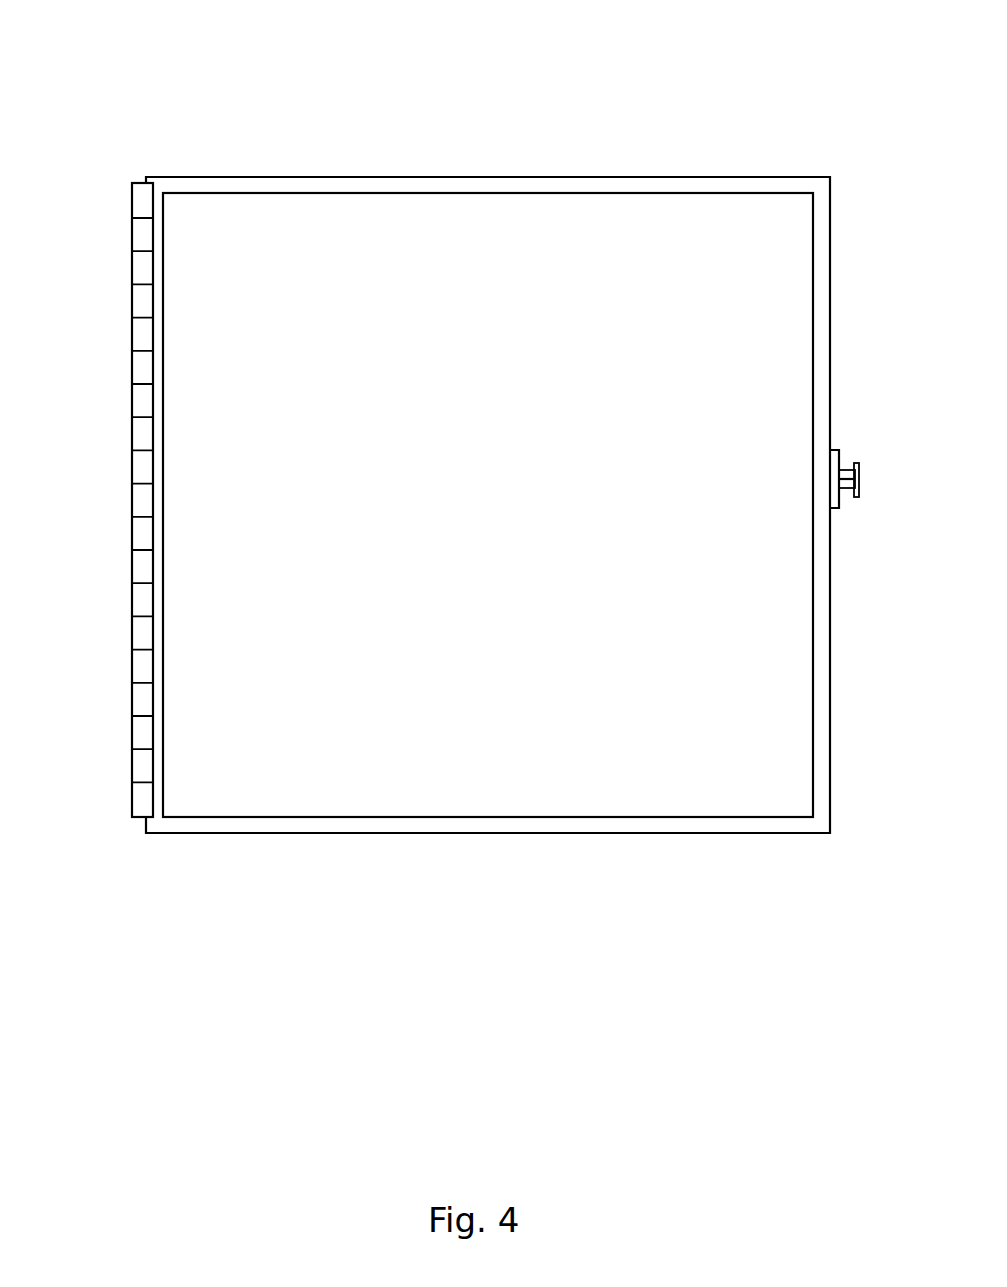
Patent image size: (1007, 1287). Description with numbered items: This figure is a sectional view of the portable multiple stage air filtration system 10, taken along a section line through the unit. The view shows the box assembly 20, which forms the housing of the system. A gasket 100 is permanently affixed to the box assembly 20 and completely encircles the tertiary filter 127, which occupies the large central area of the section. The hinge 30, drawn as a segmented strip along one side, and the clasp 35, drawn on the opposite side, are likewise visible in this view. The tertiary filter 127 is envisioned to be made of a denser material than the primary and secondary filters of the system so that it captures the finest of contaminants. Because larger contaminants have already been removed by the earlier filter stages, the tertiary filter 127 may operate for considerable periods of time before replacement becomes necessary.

The portable multiple stage air filtration system 10 is at (186, 151).
The box assembly 20 is at (532, 178).
The hinge 30 is at (130, 527).
The clasp 35 is at (859, 479).
The gasket 100 is at (290, 193).
The tertiary filter 127 is at (690, 765).